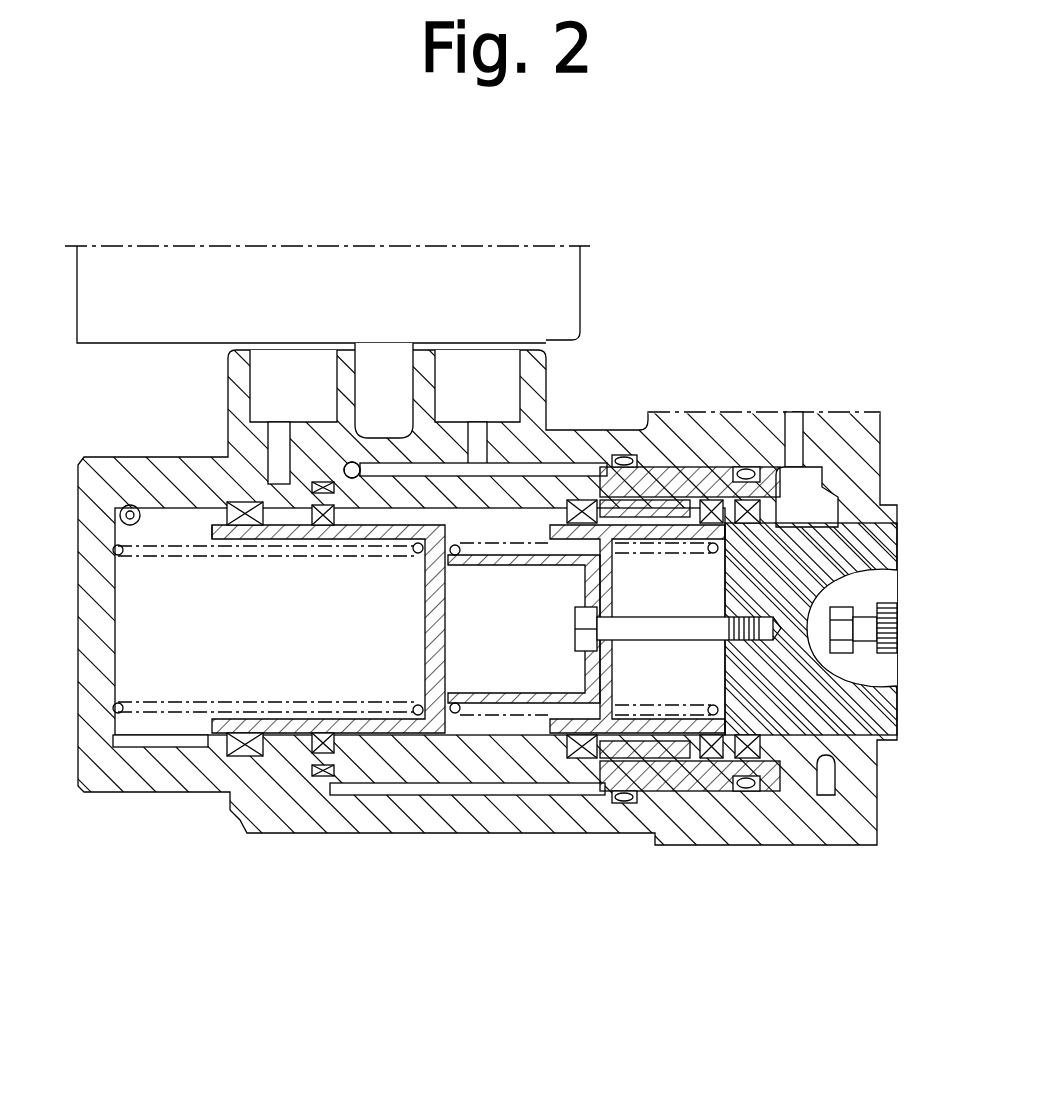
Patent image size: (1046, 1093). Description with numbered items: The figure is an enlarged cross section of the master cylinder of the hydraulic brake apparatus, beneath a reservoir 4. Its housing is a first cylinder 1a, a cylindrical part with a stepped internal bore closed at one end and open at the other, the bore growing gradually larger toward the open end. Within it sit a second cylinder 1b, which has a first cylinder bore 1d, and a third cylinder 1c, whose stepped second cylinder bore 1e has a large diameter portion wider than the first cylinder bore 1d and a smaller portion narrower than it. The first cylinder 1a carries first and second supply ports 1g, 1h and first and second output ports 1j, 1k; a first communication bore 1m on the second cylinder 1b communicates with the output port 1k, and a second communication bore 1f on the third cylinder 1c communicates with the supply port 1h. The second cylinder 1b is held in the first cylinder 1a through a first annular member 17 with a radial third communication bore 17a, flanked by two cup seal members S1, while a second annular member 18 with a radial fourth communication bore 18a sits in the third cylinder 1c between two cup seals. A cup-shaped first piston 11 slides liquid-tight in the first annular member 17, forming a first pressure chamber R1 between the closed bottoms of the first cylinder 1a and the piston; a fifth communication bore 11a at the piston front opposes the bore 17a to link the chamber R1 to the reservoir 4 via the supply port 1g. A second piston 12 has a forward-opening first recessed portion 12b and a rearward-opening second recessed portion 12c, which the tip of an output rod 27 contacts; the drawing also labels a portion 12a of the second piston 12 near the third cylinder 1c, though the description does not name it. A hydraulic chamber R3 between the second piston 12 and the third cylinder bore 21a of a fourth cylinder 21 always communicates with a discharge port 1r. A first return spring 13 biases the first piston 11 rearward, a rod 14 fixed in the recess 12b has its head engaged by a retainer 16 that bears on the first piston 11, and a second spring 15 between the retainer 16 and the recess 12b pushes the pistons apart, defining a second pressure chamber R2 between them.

The reservoir 4 is at (388, 265).
The first cylinder 1a is at (110, 467).
The second cylinder 1b is at (367, 760).
The third cylinder 1c is at (727, 460).
The first cylinder bore 1d is at (533, 713).
The second cylinder bore 1e is at (745, 720).
The second communication bore 1f is at (598, 447).
The first supply port 1g is at (272, 445).
The second supply port 1h is at (480, 443).
The first output port 1j is at (132, 522).
The second output port 1k is at (346, 460).
The first communication bore 1m is at (362, 462).
The discharge port 1r is at (793, 430).
The first piston 11 is at (188, 760).
The fifth communication bore 11a is at (248, 527).
The second piston 12 is at (810, 557).
The sleeve portion 12a is at (566, 500).
The first recessed portion 12b is at (605, 735).
The second recessed portion 12c is at (865, 600).
The first return spring 13 is at (122, 760).
The rod 14 is at (670, 633).
The second spring 15 is at (480, 710).
The retainer 16 is at (512, 712).
The first annular member 17 is at (290, 760).
The third communication bore 17a is at (225, 485).
The second annular member 18 is at (628, 505).
The fourth communication bore 18a is at (640, 480).
The fourth cylinder 21 is at (783, 827).
The third cylinder bore 21a is at (827, 760).
The output rod 27 is at (863, 657).
The first pressure chamber R1 is at (170, 760).
The second pressure chamber R2 is at (467, 648).
The hydraulic chamber R3 is at (805, 500).
The cup seal members S1 is at (247, 803).